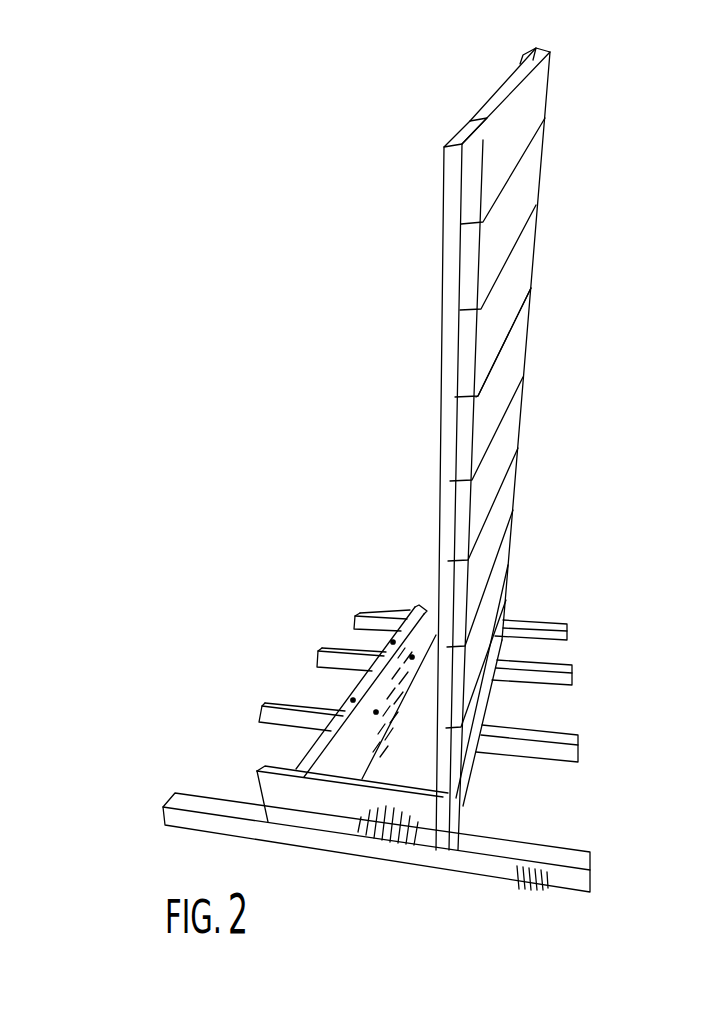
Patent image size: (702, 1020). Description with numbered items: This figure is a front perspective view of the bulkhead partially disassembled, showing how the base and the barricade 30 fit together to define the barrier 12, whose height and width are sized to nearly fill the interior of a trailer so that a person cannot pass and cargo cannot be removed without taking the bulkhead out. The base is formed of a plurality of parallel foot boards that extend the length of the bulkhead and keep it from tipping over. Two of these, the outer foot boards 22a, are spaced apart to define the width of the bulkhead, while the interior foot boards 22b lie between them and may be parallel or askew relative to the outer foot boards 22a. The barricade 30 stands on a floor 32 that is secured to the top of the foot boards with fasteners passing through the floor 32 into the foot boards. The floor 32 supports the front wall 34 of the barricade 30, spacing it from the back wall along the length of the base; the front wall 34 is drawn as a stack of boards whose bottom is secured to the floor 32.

The barrier 12 is at (450, 803).
The outer foot boards 22a is at (563, 885).
The interior foot boards 22b is at (563, 677).
The barricade 30 is at (524, 414).
The floor 32 is at (393, 775).
The front wall 34 is at (517, 268).